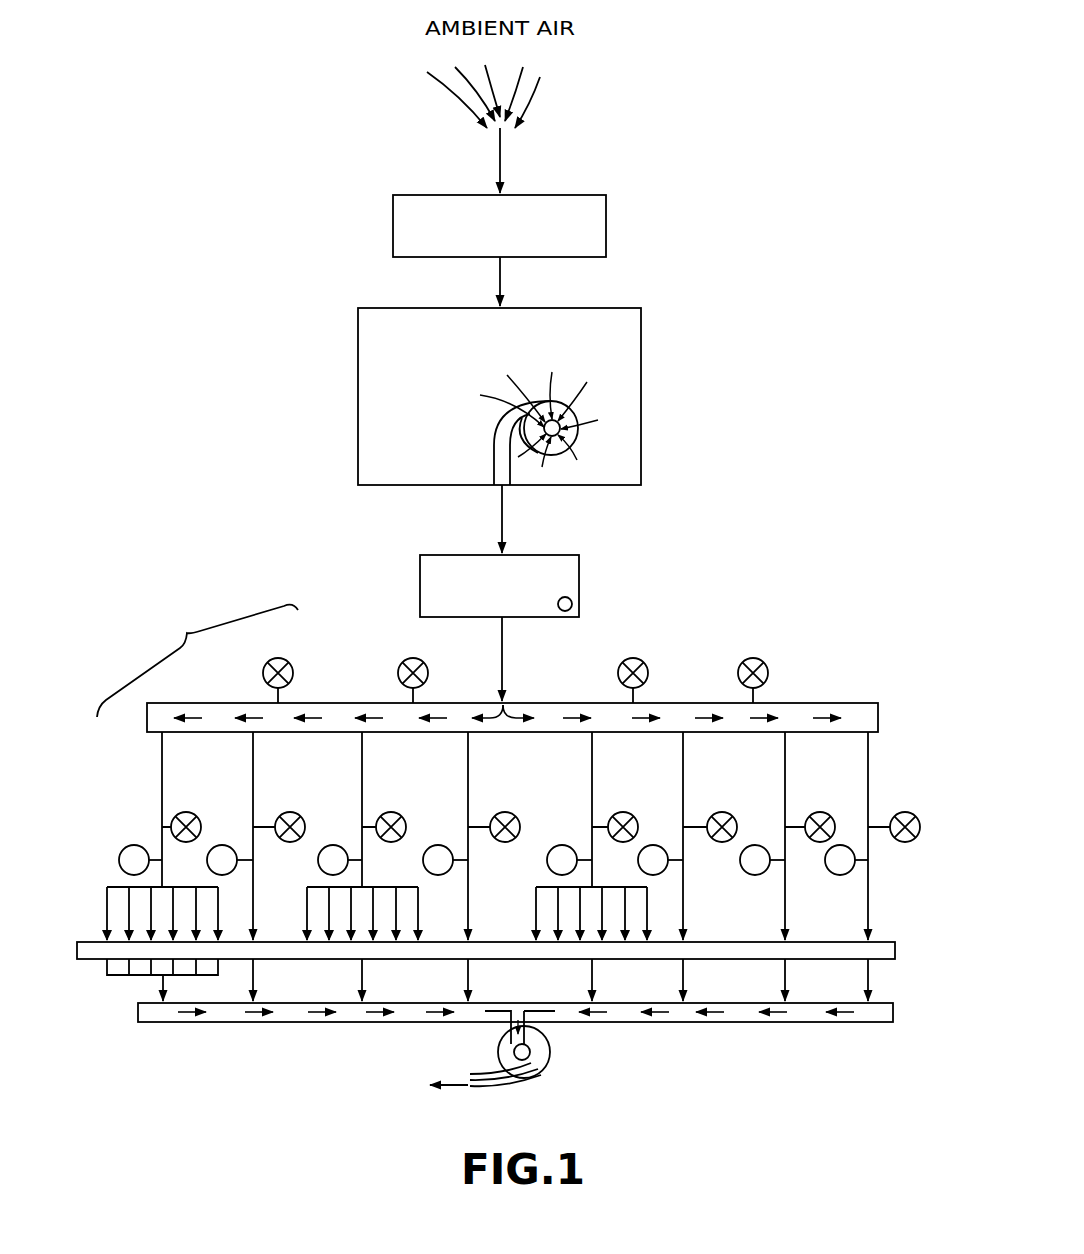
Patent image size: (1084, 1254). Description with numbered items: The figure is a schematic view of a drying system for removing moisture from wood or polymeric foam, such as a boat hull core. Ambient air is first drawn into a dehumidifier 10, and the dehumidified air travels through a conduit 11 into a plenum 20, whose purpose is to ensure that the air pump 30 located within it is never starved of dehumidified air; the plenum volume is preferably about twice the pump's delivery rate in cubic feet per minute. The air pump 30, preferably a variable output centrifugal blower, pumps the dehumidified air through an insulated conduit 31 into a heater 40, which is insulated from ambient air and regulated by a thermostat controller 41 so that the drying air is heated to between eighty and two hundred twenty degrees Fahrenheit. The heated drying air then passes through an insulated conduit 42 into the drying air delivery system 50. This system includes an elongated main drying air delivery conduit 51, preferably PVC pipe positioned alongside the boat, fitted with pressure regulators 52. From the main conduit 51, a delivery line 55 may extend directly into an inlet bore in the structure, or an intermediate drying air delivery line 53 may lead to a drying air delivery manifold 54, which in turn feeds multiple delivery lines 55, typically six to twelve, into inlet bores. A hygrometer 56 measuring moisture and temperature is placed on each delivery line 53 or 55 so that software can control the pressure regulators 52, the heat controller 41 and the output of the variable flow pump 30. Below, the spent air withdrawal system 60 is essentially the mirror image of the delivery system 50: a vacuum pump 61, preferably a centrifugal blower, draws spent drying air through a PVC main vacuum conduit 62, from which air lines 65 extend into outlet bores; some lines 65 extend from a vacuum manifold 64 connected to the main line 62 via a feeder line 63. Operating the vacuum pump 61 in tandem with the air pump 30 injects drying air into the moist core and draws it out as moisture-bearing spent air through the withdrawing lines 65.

The dehumidifier 10 is at (610, 217).
The conduit 11 is at (506, 284).
The plenum 20 is at (644, 360).
The air pump 30 is at (584, 415).
The insulated conduit 31 is at (509, 521).
The heater 40 is at (583, 566).
The thermostat controller 41 is at (576, 602).
The heated air conduit / valve 42 is at (508, 657).
The drying air delivery system 50 is at (197, 661).
The main drying air delivery conduit 51 is at (815, 703).
The pressure regulators 52 is at (265, 668).
The drying air delivery line to manifold 53 is at (160, 795).
The drying air delivery manifold 54 is at (107, 887).
The drying air delivery lines 55 is at (254, 763).
The hygrometer 56 is at (125, 846).
The spent air withdrawal system 60 is at (471, 1015).
The vacuum pump 61 is at (549, 1064).
The main vacuum conduit 62 is at (350, 1023).
The vacuum line to manifold 63 is at (158, 982).
The vacuum manifold 64 is at (187, 979).
The vacuum line to vacuum withdrawal bores 65 is at (106, 967).